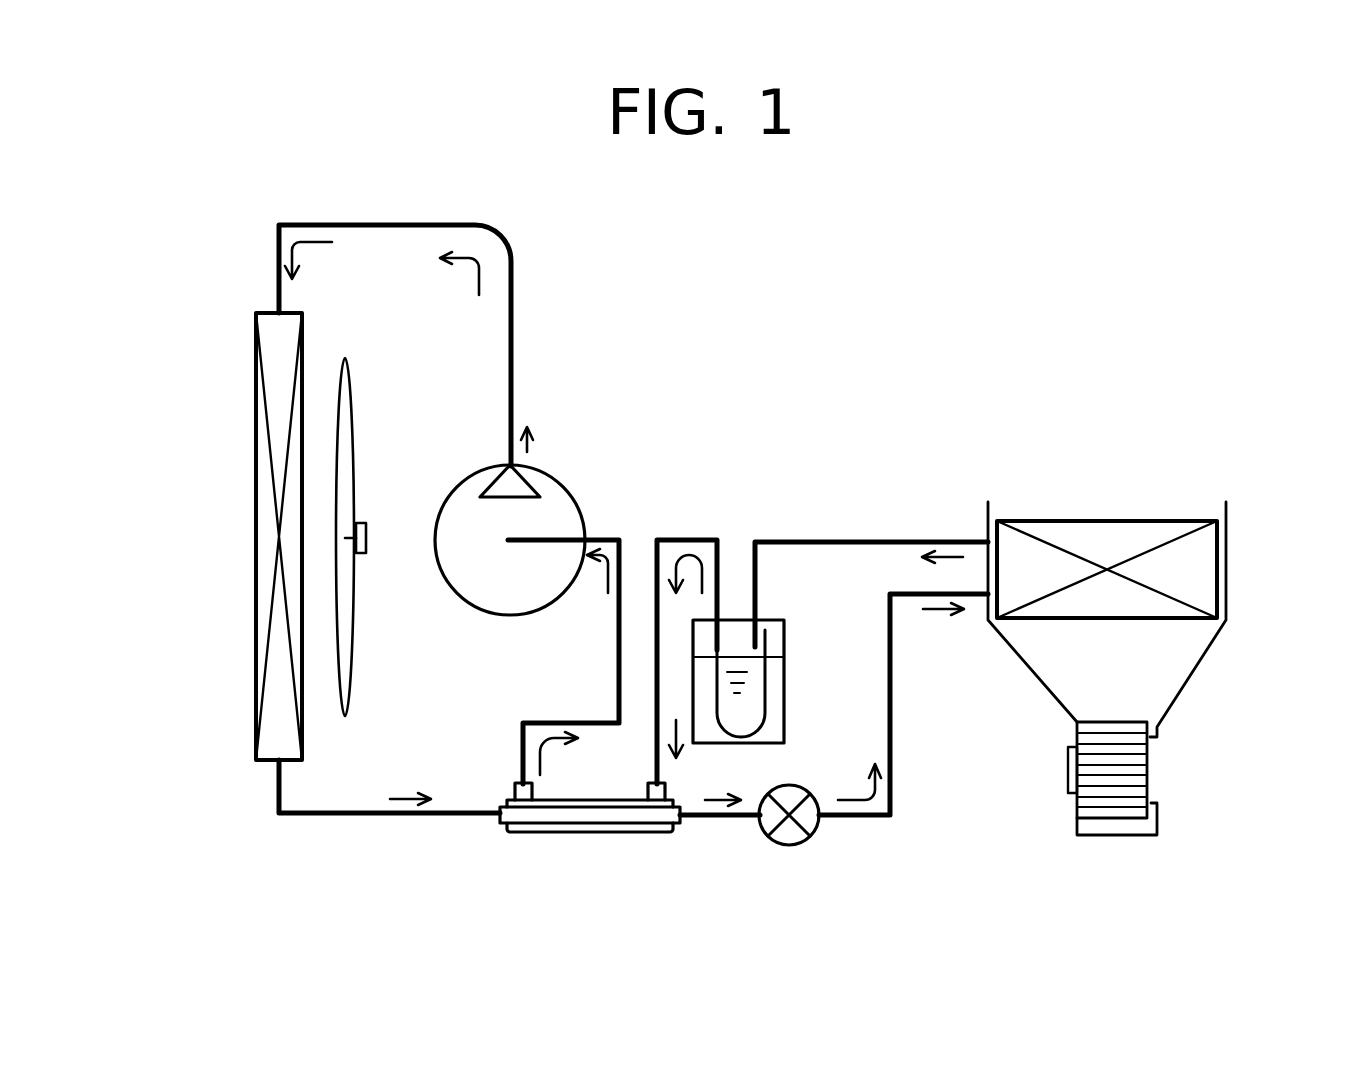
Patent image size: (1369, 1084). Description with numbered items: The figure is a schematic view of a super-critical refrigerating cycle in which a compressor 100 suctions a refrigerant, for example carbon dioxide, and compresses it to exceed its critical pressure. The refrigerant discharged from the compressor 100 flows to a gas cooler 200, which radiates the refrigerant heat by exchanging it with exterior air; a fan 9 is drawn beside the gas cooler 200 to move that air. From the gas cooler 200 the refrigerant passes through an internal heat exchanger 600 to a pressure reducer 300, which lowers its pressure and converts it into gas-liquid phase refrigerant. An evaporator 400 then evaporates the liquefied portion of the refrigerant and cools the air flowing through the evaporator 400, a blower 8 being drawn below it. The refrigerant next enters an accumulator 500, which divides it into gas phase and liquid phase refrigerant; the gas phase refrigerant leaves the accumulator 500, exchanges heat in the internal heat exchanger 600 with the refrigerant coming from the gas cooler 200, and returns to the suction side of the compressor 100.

The gas cooler 200 is at (258, 370).
The cooling fan 9 is at (345, 428).
The compressor 100 is at (498, 598).
The internal heat exchanger 600 is at (613, 845).
The accumulator 500 is at (773, 711).
The pressure reducer 300 is at (792, 834).
The evaporator 400 is at (1205, 590).
The blower 8 is at (1140, 777).